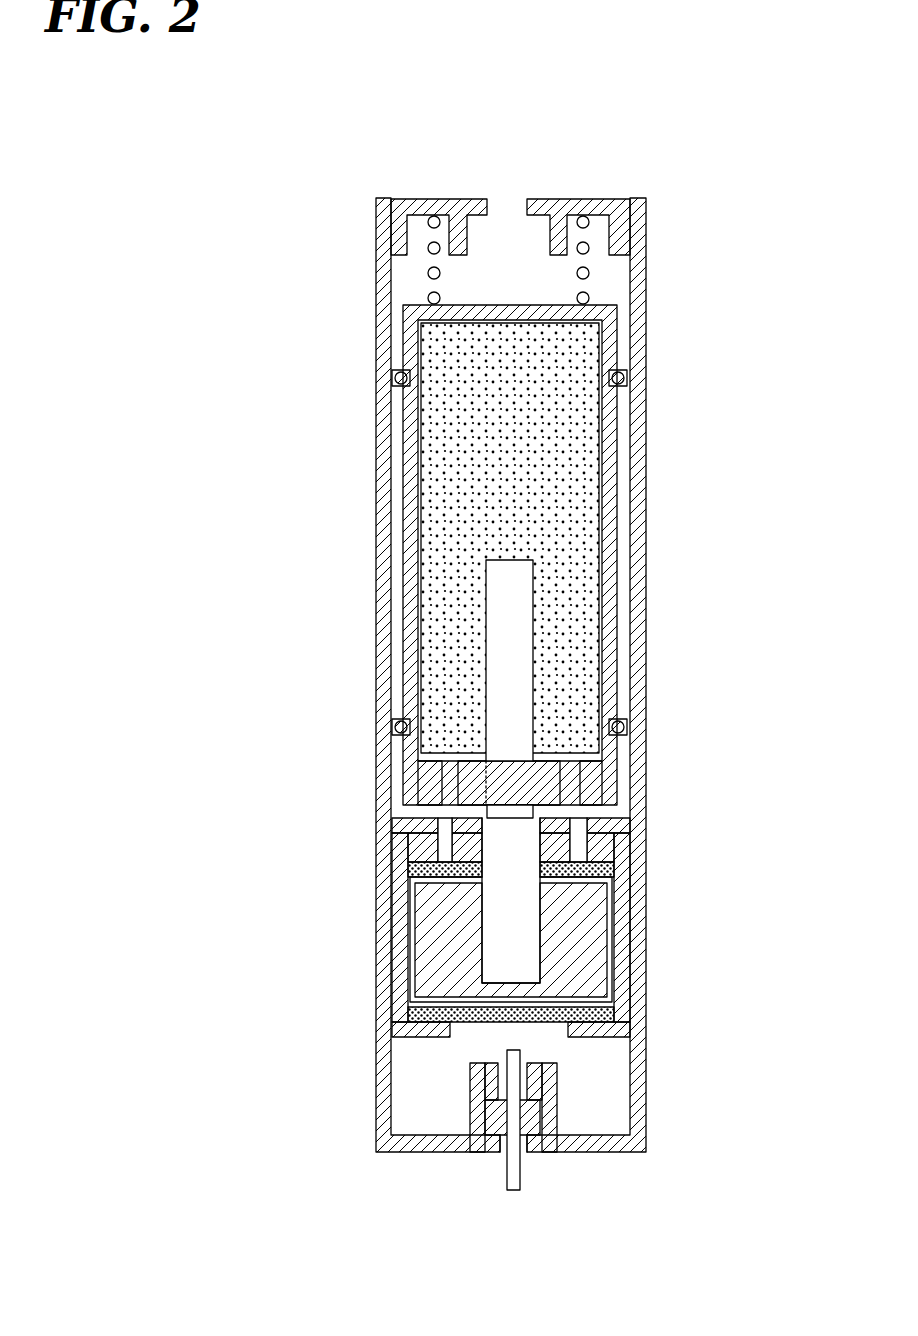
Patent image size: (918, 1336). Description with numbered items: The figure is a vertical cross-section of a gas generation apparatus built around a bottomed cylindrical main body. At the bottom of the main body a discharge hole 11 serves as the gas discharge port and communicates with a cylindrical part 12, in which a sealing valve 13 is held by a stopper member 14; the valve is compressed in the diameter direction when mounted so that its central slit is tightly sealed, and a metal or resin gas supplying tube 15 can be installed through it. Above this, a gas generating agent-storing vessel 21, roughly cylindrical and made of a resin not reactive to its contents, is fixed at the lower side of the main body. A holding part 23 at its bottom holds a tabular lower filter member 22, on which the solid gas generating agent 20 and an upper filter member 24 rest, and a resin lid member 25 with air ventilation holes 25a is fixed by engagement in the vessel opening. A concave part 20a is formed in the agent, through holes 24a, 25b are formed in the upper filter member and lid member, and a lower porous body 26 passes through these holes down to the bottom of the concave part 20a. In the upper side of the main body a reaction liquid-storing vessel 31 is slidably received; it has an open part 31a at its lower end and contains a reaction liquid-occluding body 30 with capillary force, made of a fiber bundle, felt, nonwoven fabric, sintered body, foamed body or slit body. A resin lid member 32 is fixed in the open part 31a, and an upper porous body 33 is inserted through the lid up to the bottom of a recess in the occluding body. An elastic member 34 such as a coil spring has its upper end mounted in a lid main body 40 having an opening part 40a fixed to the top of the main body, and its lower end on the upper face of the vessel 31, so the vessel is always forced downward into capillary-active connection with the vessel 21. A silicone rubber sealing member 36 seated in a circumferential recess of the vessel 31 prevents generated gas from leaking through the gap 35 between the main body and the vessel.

The discharge hole 11 is at (503, 1150).
The cylindrical part 12 is at (545, 1113).
The sealing valve 13 is at (493, 1120).
The stopper member 14 is at (540, 1080).
The gas supplying tube 15 is at (521, 1185).
The solid gas generating agent 20 is at (435, 945).
The concave part 20a is at (548, 932).
The gas generating agent-storing vessel 21 is at (400, 985).
The lower filter member 22 is at (613, 1012).
The holding part 23 is at (398, 1030).
The upper filter member 24 is at (600, 869).
The through hole 24a is at (615, 874).
The lid member 25 is at (603, 820).
The air ventilation holes 25a is at (580, 820).
The through hole 25b is at (540, 843).
The lower porous body 26 is at (493, 843).
The reaction liquid-occluding body 30 is at (447, 568).
The reaction liquid-storing vessel 31 is at (412, 475).
The open part 31a is at (617, 369).
The lid member 32 is at (410, 797).
The upper porous body 33 is at (500, 667).
The elastic member 34 is at (427, 274).
The gap 35 is at (627, 535).
The sealing member 36 is at (627, 378).
The lid main body 40 is at (563, 200).
The opening part 40a is at (503, 210).